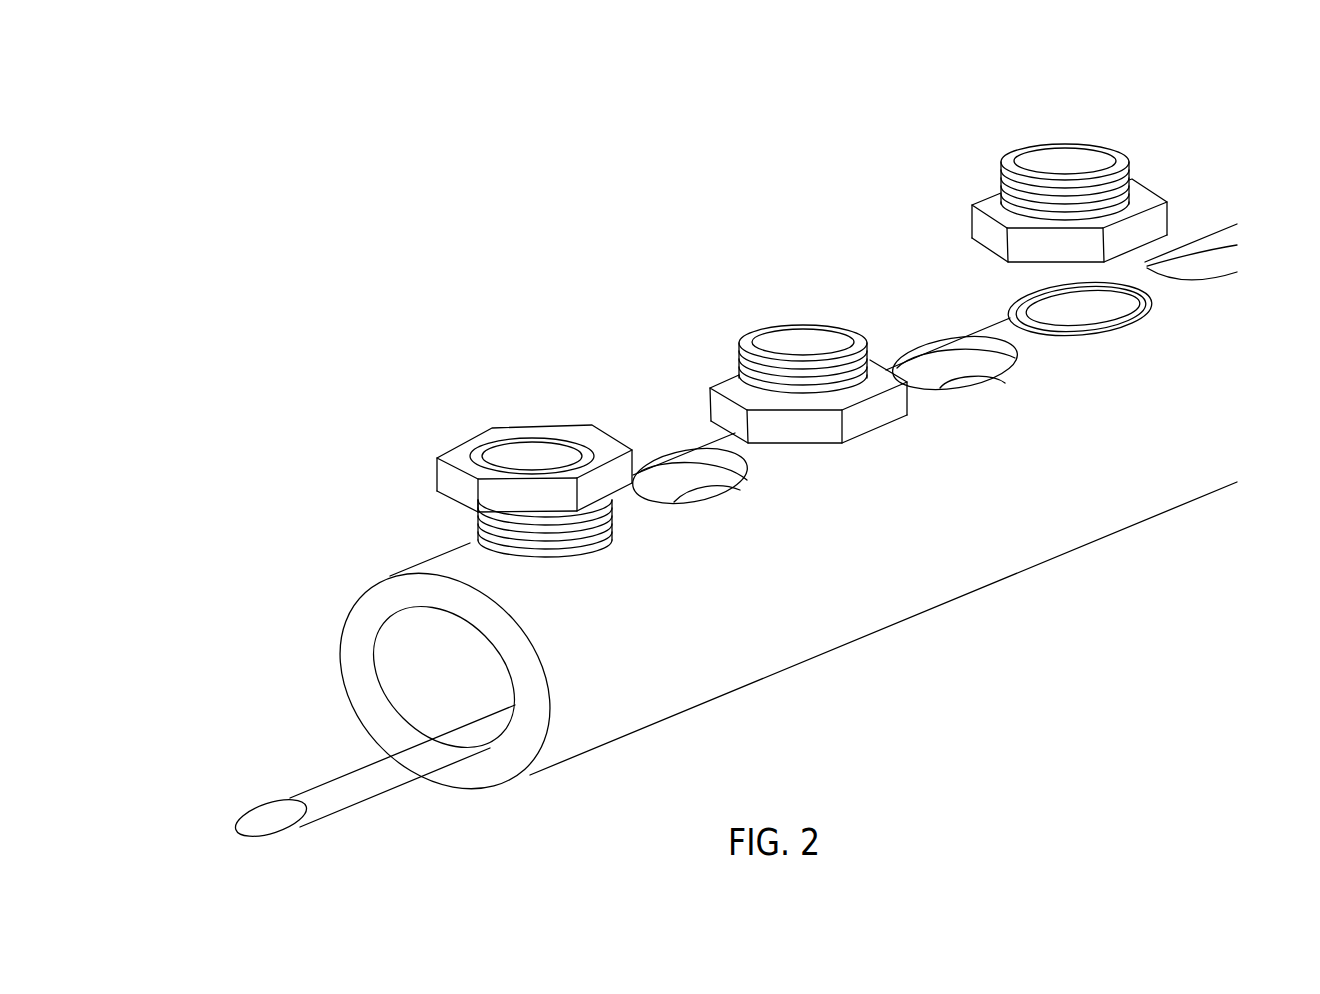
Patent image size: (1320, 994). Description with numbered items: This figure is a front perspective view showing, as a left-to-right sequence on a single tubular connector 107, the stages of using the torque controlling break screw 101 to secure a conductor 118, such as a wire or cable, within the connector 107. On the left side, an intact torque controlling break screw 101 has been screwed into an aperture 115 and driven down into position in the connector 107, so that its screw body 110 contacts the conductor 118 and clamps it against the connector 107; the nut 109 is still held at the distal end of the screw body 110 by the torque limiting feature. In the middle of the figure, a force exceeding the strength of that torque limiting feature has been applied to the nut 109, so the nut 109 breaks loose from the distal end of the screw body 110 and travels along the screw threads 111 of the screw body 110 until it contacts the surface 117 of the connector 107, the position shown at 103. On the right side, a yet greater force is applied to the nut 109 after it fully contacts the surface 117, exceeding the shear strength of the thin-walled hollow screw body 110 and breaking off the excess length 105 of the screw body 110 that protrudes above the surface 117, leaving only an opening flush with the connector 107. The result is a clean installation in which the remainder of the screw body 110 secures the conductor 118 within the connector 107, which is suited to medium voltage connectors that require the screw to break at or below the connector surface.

The torque controlling break screw 101 is at (378, 470).
The screwed-down position of the torque controlling break screw 103 is at (680, 353).
The excess length of the screw body 105 is at (913, 185).
The connector 107 is at (967, 620).
The nut 109 is at (440, 490).
The screw body 110 is at (527, 457).
The screw threads 111 is at (747, 347).
The aperture 115 is at (748, 478).
The surface 117 is at (1095, 461).
The conductor 118 is at (337, 792).